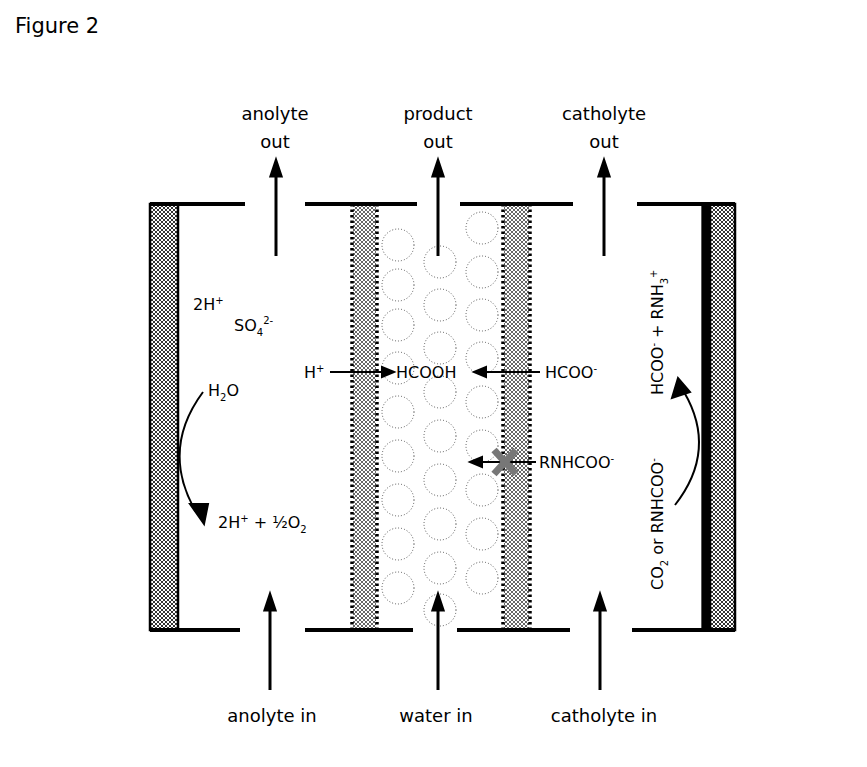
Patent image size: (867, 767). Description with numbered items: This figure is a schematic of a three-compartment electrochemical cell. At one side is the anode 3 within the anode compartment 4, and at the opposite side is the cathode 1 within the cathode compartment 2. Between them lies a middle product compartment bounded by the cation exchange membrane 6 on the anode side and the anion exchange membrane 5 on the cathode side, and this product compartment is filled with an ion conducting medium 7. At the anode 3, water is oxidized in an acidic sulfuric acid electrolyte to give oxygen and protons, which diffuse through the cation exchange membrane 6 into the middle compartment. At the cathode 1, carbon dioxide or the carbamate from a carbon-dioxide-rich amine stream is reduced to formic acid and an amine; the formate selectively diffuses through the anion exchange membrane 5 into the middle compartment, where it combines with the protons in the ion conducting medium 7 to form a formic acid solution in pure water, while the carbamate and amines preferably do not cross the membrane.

The cathode 1 is at (720, 207).
The cathode compartment 2 is at (675, 614).
The anode 3 is at (164, 207).
The anode compartment 4 is at (200, 614).
The anion exchange membrane 5 is at (517, 207).
The cation exchange membrane 6 is at (364, 207).
The ion conducting medium 7 is at (423, 568).